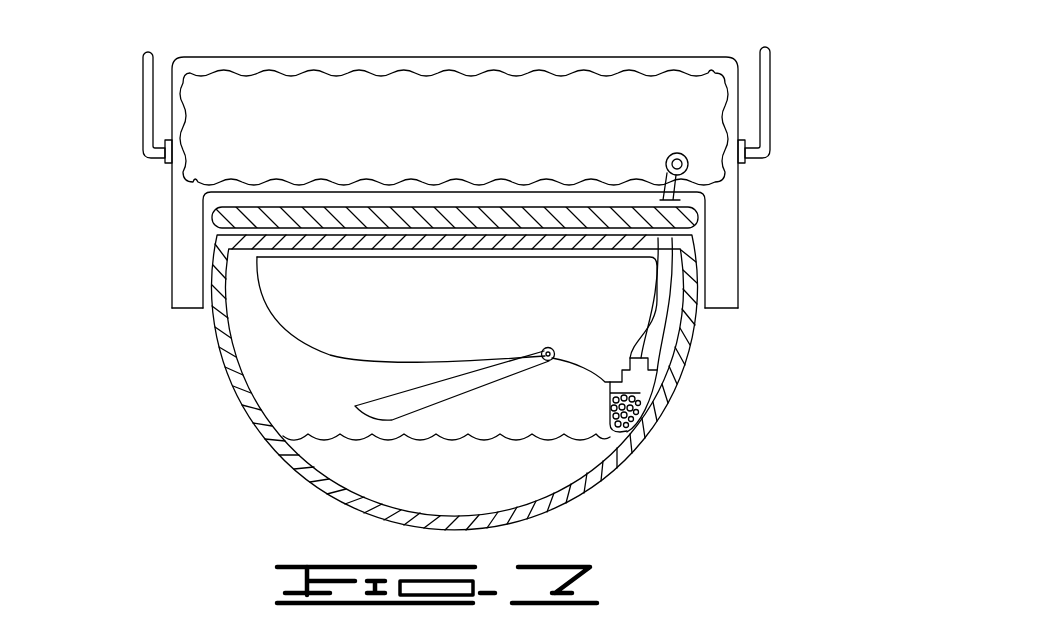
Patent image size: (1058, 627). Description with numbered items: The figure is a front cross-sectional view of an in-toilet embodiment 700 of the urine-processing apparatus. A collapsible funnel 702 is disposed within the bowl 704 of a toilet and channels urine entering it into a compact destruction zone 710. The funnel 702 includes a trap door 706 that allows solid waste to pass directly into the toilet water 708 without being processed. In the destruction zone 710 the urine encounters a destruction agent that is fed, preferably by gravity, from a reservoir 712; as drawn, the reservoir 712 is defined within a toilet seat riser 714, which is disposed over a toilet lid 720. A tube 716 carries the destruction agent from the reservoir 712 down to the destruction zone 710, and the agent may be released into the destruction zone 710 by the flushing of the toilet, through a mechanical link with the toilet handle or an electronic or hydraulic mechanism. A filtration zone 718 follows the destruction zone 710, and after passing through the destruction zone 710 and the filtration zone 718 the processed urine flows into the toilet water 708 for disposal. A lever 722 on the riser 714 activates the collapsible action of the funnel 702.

The in-toilet embodiment 700 is at (812, 204).
The collapsible funnel 702 is at (455, 318).
The bowl 704 is at (272, 372).
The trap door 706 is at (493, 387).
The toilet water 708 is at (545, 484).
The destruction zone 710 is at (647, 380).
The reservoir 712 is at (465, 149).
The toilet seat riser 714 is at (650, 56).
The tube 716 is at (668, 315).
The filtration zone 718 is at (625, 415).
The toilet lid 720 is at (213, 220).
The lever 722 is at (143, 104).